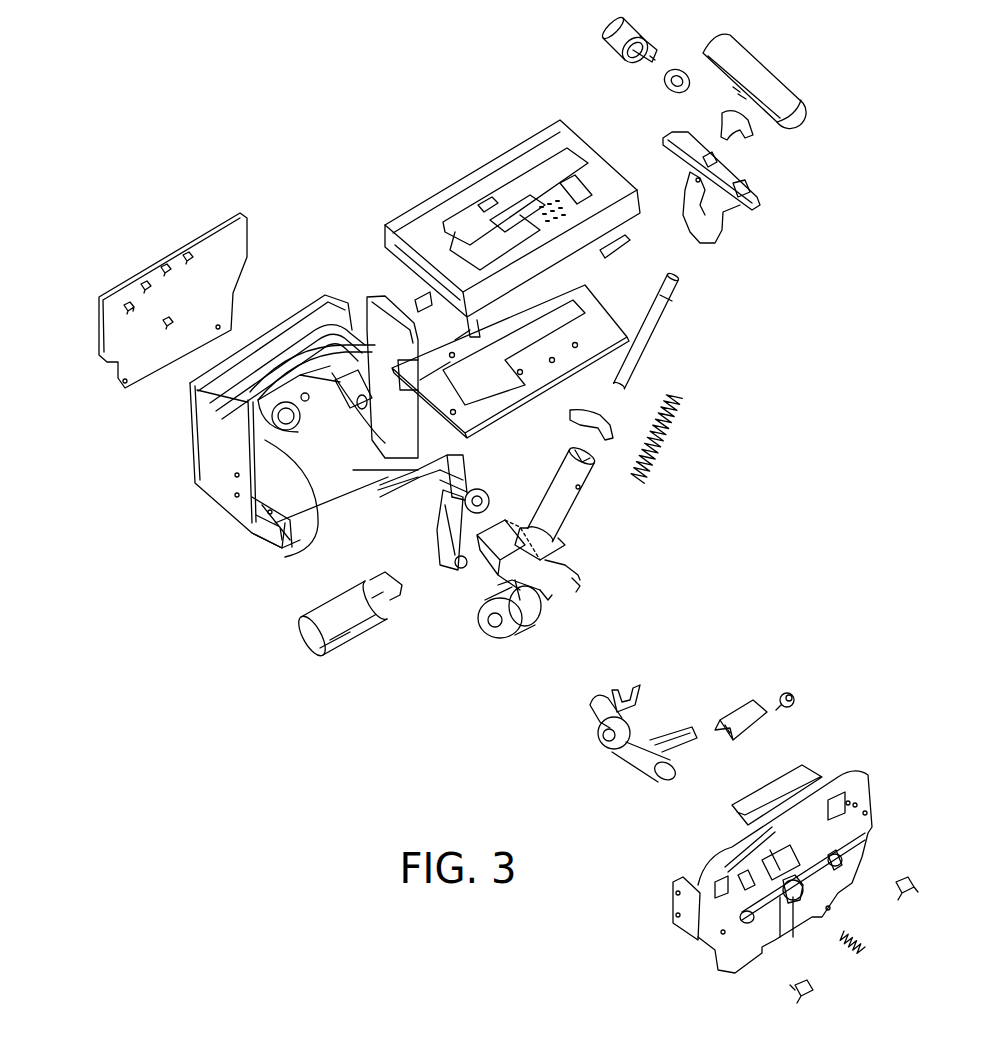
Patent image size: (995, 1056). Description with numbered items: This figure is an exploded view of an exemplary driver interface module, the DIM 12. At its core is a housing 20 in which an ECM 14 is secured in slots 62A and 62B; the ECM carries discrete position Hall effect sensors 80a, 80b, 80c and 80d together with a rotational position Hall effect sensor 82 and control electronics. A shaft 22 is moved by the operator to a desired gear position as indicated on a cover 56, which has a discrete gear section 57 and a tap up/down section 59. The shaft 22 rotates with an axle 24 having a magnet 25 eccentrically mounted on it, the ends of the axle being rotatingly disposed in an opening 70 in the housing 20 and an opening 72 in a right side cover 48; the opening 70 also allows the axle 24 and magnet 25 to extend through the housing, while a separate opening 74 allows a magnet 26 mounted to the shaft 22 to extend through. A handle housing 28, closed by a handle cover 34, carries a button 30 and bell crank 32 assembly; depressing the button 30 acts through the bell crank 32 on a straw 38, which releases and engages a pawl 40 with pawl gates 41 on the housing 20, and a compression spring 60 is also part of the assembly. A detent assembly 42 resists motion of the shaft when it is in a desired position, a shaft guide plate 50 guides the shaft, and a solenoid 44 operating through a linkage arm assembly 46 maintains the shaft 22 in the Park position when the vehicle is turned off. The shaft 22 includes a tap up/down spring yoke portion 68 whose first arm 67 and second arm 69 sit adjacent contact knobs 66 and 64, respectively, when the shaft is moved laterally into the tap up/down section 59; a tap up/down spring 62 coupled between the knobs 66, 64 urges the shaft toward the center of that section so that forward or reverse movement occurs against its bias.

The DIM 12 is at (521, 110).
The ECM 14 is at (84, 329).
The discrete position Hall effect sensor 80a is at (124, 305).
The discrete position Hall effect sensor 80b is at (143, 285).
The discrete position Hall effect sensor 80c is at (163, 268).
The discrete position Hall effect sensor 80d is at (186, 255).
The rotational position Hall effect sensor 82 is at (170, 322).
The housing 20 is at (196, 488).
The slot 62A is at (190, 383).
The slot 62B is at (327, 300).
The opening 74 is at (283, 392).
The pawl gates 41 is at (308, 402).
The opening 70 is at (288, 557).
The cover 56 is at (500, 165).
The discrete gear section 57 is at (485, 214).
The tap up/down section 59 is at (490, 245).
The button 30 is at (603, 33).
The handle cover 34 is at (777, 80).
The bell crank 32 is at (755, 135).
The handle housing 28 is at (757, 200).
The straw 38 is at (675, 298).
The pawl 40 is at (605, 425).
The compression spring 60 is at (660, 450).
The shaft guide plate 50 is at (445, 330).
The linkage arm assembly 46 is at (482, 492).
The magnet 26 is at (445, 527).
The shaft 22 is at (570, 520).
The second arm 69 is at (580, 575).
The tap up/down spring yoke portion 68 is at (576, 586).
The first arm 67 is at (548, 595).
The solenoid 44 is at (312, 638).
The axle 24 is at (592, 717).
The magnet 25 is at (592, 702).
The detent assembly 42 is at (752, 700).
The right side cover 48 is at (868, 780).
The opening 72 is at (807, 890).
The knob 64 is at (904, 880).
The tap up/down spring 62 is at (862, 950).
The knob 66 is at (815, 990).